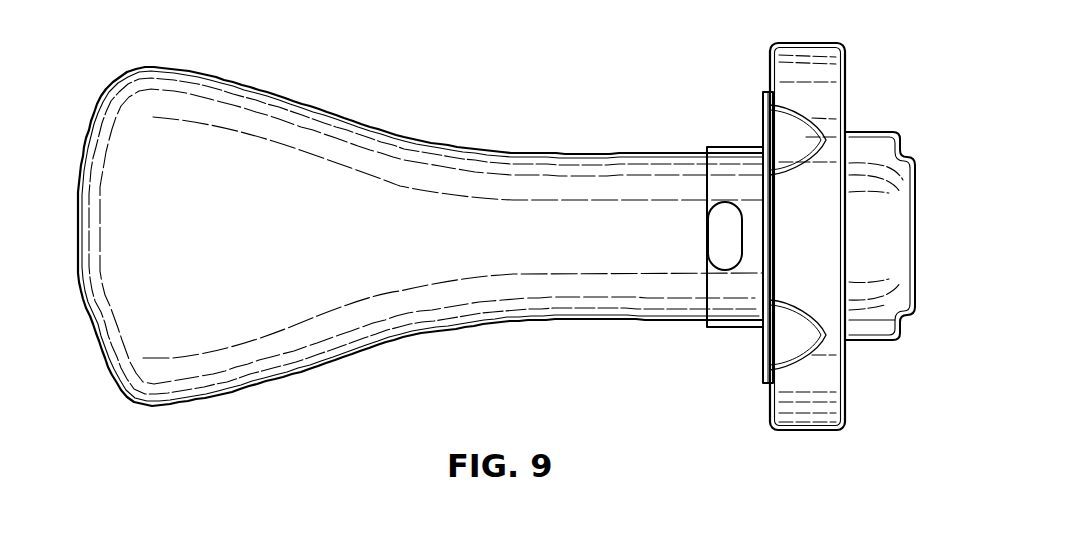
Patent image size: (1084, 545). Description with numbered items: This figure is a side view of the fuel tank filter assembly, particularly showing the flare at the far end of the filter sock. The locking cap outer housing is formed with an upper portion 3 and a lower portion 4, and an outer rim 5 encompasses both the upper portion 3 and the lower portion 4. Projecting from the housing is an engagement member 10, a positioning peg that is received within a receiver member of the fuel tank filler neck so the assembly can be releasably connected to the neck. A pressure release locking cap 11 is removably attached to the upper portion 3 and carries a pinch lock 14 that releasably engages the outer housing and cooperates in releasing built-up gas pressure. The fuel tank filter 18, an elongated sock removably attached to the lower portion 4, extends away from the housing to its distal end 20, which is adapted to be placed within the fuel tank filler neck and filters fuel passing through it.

The upper portion 3 is at (847, 102).
The lower portion 4 is at (738, 317).
The outer rim 5 is at (807, 430).
The engagement member 10 is at (723, 225).
The pressure release locking cap 11 is at (917, 250).
The pinch lock 14 is at (877, 328).
The fuel tank filter 18 is at (477, 322).
The distal end 20 is at (78, 255).